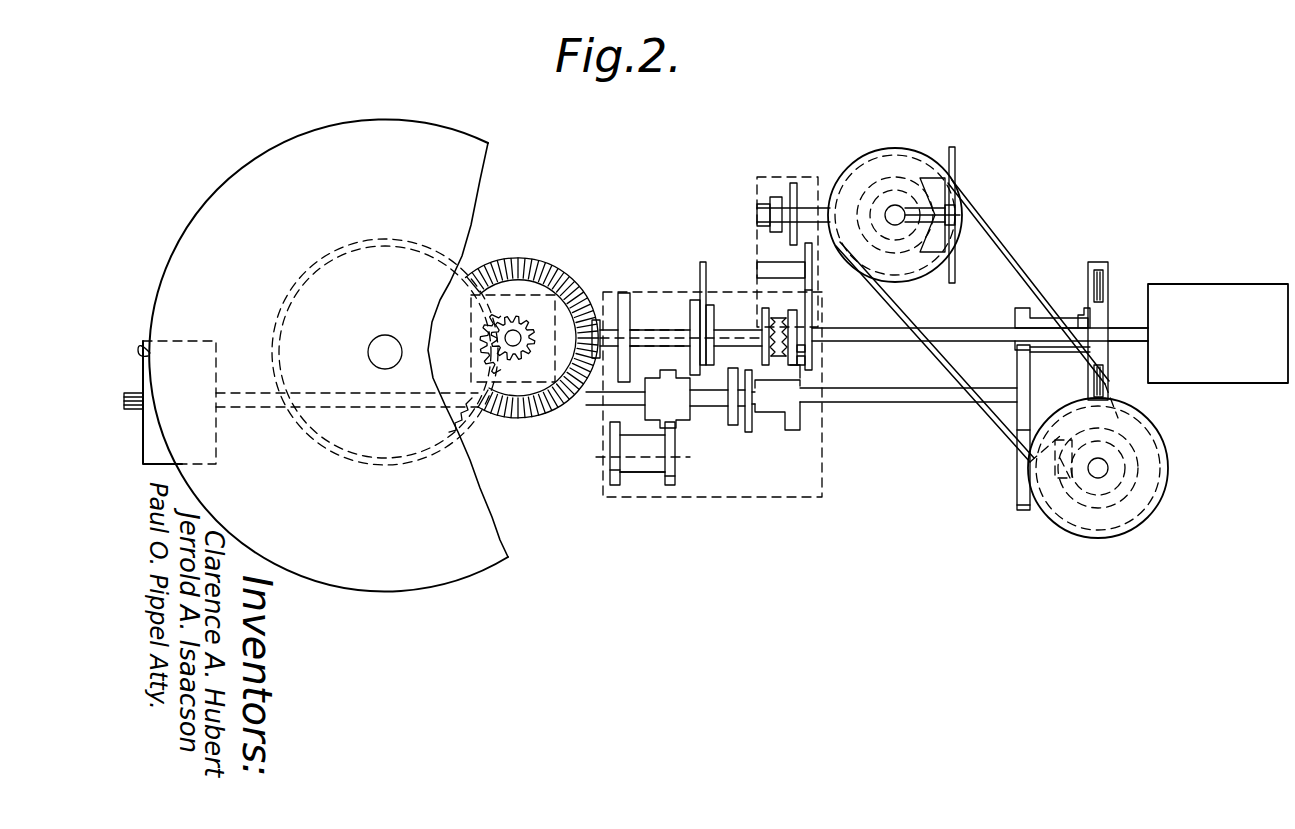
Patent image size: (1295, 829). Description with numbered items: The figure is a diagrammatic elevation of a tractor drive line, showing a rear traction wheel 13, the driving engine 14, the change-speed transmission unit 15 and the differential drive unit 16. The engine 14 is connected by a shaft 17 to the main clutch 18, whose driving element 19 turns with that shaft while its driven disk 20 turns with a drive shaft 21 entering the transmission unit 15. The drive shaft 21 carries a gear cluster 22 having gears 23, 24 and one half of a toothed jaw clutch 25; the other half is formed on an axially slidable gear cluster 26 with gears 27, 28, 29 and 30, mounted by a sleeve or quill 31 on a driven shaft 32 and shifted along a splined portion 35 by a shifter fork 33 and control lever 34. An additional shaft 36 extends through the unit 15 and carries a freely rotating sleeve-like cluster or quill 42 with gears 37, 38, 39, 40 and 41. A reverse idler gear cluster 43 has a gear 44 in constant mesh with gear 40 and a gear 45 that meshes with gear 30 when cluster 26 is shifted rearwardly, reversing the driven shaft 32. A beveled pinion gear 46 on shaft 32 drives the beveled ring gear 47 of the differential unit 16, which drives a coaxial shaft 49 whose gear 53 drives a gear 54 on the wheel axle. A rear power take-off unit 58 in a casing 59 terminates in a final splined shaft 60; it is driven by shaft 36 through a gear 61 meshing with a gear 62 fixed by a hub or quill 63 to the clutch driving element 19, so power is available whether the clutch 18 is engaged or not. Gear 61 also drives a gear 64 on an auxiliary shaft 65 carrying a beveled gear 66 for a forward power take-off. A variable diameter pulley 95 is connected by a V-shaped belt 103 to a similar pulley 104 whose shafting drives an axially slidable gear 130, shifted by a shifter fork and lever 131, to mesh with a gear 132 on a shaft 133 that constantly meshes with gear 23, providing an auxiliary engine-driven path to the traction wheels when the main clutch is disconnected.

The rear traction wheels 13 is at (470, 570).
The driving engine 14 is at (1212, 290).
The change-speed transmission unit 15 is at (788, 505).
The differential drive unit 16 is at (520, 378).
The shaft 17 is at (1122, 328).
The main clutch 18 is at (1105, 256).
The driving element 19 is at (1108, 272).
The driven disk 20 is at (1092, 278).
The drive shaft 21 is at (975, 328).
The gear cluster 22 is at (808, 350).
The gear 23 is at (808, 362).
The gear 24 is at (798, 366).
The toothed jaw clutch 25 is at (795, 304).
The axially slidable gear cluster 26 is at (742, 318).
The gear 27 is at (765, 308).
The gear 28 is at (740, 292).
The gear 29 is at (692, 300).
The driven shaft gear 30 is at (624, 292).
The sleeve or quill 31 is at (648, 330).
The driven shaft 32 is at (606, 330).
The shifter fork 33 is at (703, 262).
The control lever 34 is at (708, 305).
The splined portion 35 is at (604, 374).
The additional shaft 36 is at (906, 403).
The gear 37 is at (800, 430).
The gear 38 is at (753, 430).
The gear 39 is at (730, 426).
The gear 40 is at (678, 421).
The gear 41 is at (652, 422).
The sleeve-like cluster or quill 42 is at (750, 436).
The reverse idler gear cluster 43 is at (645, 478).
The gear 44 is at (676, 476).
The gear 45 is at (608, 470).
The beveled pinion gear 46 is at (592, 322).
The beveled ring gear 47 is at (537, 268).
The coaxial shaft 49 is at (522, 336).
The gear 53 is at (509, 322).
The gear 54 is at (462, 425).
The power take-off unit 58 is at (190, 338).
The casing 59 is at (150, 350).
The final power take-off splined shaft 60 is at (133, 393).
The gear 61 is at (1028, 415).
The gear 62 is at (1014, 346).
The sleeve-like hub or quill 63 is at (1072, 318).
The gear 64 is at (1017, 490).
The auxiliary shaft 65 is at (1055, 448).
The beveled gear 66 is at (1066, 492).
The variable diameter pulley 95 is at (1172, 496).
The V-shaped belt 103 is at (1003, 246).
The variable diameter pulley 104 is at (910, 140).
The axially slidable gear 130 is at (793, 198).
The shifter fork and lever 131 is at (762, 185).
The gear 132 is at (812, 296).
The shaft 133 is at (773, 270).